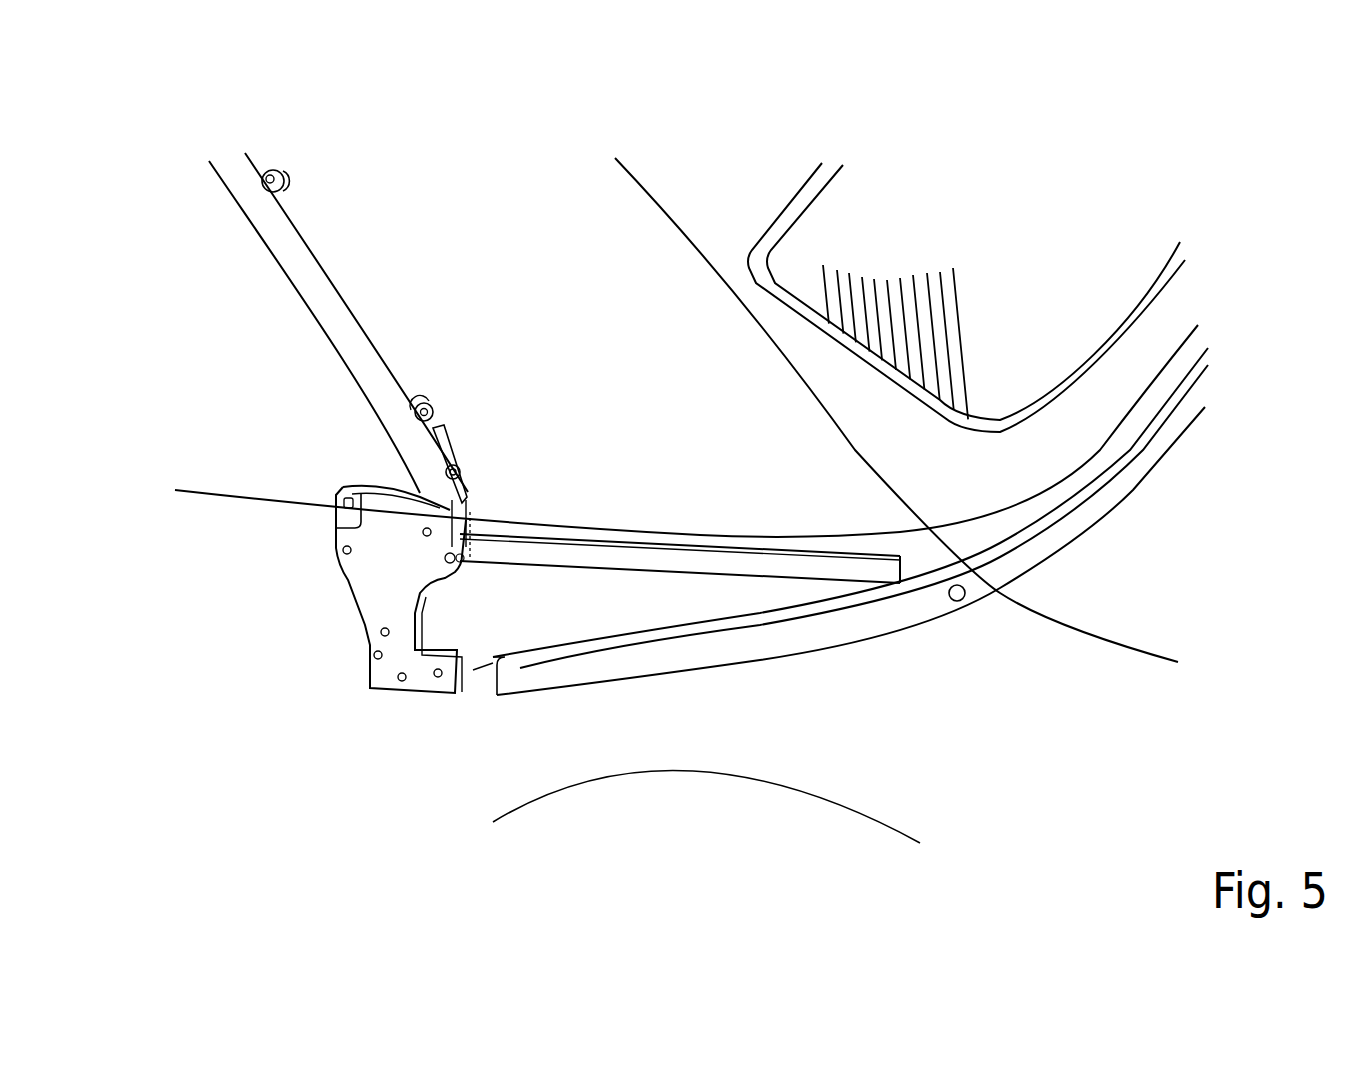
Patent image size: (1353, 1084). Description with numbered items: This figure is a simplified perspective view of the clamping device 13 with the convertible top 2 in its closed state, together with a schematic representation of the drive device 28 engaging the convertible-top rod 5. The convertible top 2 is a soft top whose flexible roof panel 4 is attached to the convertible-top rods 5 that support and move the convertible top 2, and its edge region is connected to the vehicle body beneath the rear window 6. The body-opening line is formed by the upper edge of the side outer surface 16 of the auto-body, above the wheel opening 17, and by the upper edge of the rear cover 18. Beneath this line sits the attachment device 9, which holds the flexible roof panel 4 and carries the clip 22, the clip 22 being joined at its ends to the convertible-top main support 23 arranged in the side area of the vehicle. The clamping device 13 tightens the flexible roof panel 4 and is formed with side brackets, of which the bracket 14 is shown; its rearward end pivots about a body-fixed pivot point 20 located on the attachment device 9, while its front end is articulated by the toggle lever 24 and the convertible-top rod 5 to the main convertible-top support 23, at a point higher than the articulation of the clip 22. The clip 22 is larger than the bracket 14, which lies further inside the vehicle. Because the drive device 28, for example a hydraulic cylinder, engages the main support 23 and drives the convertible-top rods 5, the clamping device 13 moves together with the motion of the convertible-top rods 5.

The convertible top 2 is at (235, 202).
The flexible roof panel 4 is at (665, 210).
The convertible-top rod 5 is at (343, 328).
The rear window 6 is at (848, 225).
The attachment device 9 is at (1087, 540).
The clamping device 13 is at (778, 580).
The bracket 14 is at (595, 550).
The side outer surface 16 is at (687, 723).
The wheel opening 17 is at (818, 792).
The rear cover 18 is at (1190, 592).
The pivot point 20 is at (958, 600).
The clip 22 is at (885, 617).
The convertible-top main support 23 is at (382, 592).
The toggle lever 24 is at (461, 506).
The drive device 28 is at (402, 429).